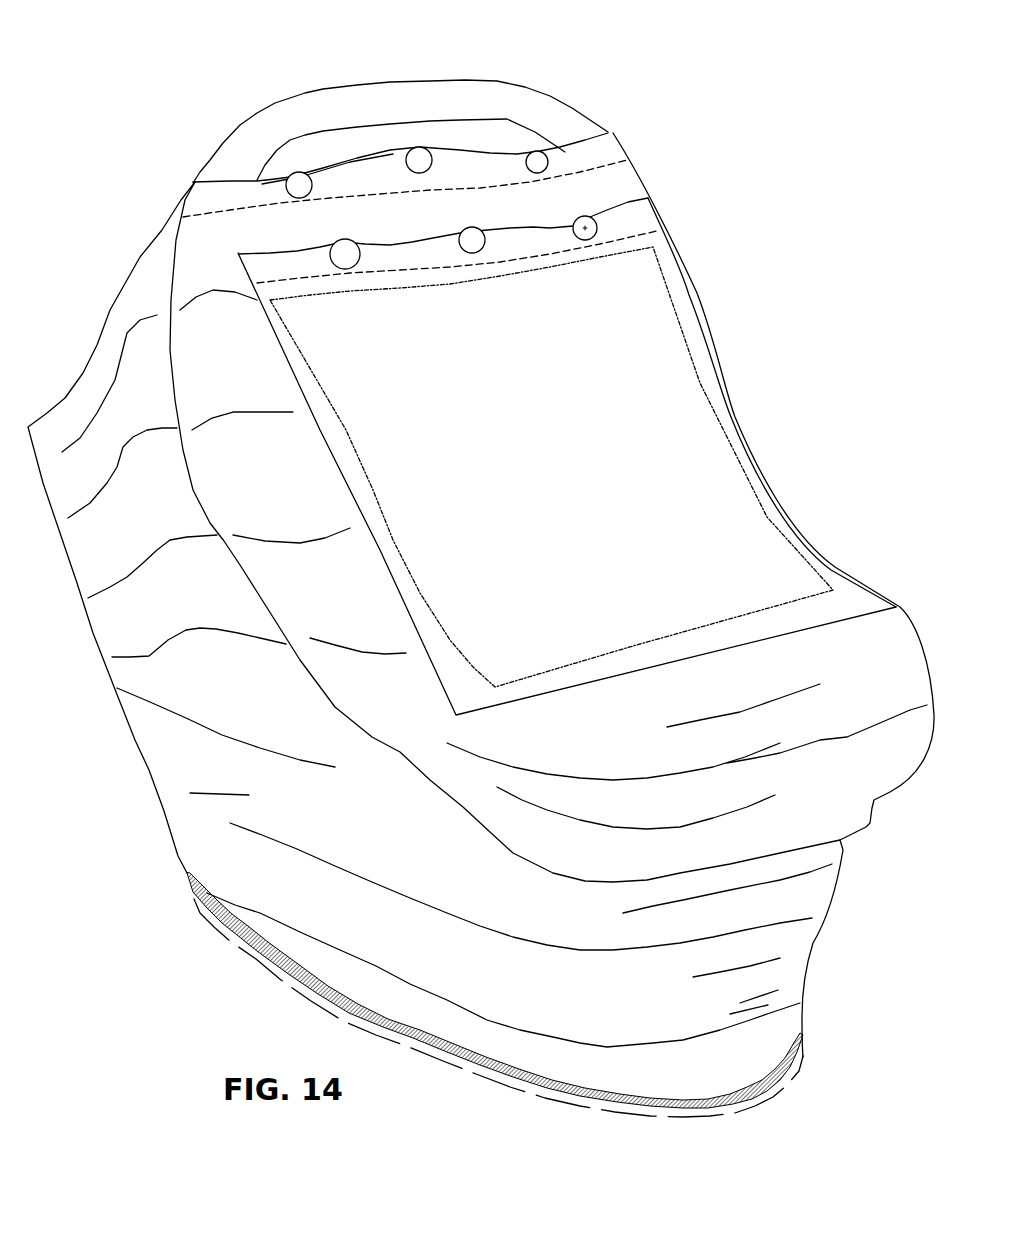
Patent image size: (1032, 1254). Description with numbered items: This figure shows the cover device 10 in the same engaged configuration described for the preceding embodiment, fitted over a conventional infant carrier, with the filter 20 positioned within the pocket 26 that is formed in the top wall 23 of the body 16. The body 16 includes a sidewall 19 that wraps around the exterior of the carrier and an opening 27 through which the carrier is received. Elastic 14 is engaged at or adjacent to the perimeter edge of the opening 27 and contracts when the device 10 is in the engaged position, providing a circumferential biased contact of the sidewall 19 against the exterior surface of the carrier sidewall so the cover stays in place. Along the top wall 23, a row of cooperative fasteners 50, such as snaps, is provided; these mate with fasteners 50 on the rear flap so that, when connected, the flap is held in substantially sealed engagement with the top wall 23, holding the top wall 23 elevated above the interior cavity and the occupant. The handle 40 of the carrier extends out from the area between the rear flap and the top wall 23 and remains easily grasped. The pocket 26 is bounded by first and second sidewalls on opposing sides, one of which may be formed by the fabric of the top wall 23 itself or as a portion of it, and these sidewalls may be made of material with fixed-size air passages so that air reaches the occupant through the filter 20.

The cover device 10 is at (730, 198).
The elastic 14 is at (317, 980).
The body 16 is at (28, 427).
The sidewall 19 is at (249, 805).
The filter 20 is at (767, 593).
The top wall 23 is at (603, 193).
The pocket 26 is at (297, 253).
The opening 27 is at (563, 1089).
The handle 40 is at (453, 107).
The cooperative fasteners 50 is at (298, 185).